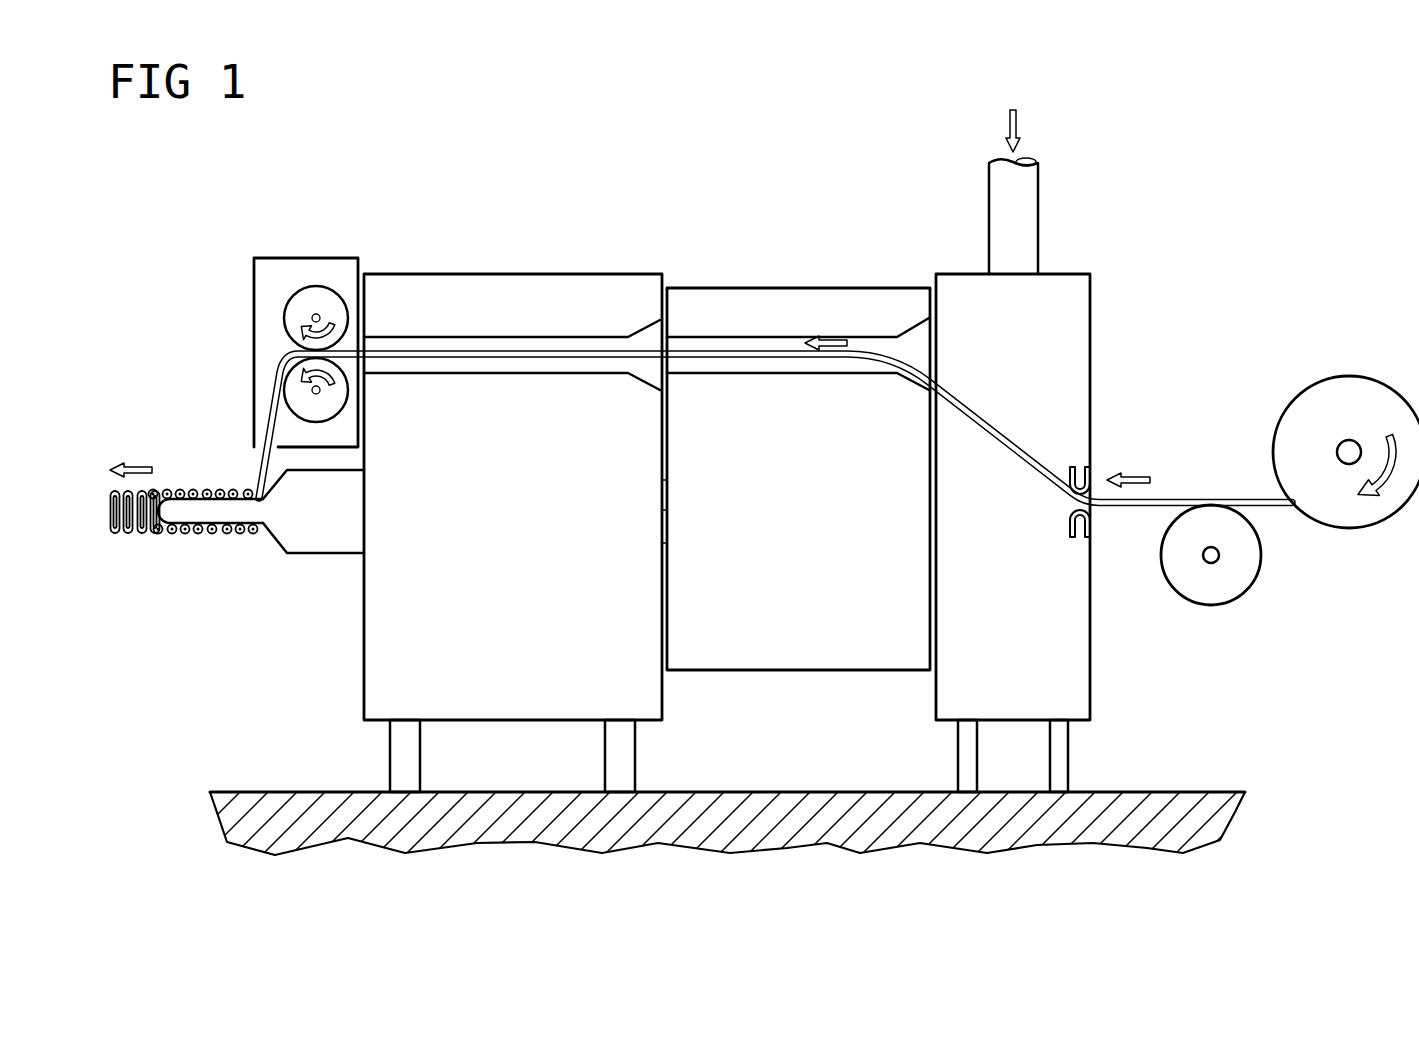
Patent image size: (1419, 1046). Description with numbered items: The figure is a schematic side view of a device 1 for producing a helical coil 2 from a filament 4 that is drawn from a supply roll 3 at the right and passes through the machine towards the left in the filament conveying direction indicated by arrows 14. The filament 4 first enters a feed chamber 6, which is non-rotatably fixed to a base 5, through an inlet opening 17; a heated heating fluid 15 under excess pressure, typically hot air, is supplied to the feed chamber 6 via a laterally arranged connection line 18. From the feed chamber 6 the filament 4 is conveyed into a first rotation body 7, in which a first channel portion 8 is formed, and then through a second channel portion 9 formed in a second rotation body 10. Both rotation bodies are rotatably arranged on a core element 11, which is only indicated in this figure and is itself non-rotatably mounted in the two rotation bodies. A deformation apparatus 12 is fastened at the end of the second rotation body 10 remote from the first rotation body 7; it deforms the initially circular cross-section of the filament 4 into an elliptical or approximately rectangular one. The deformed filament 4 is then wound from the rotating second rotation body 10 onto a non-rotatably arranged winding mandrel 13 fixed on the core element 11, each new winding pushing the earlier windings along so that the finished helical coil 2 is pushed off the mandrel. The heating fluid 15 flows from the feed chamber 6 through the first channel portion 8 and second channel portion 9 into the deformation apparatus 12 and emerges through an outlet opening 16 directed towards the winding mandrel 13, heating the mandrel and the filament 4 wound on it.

The device 1 is at (544, 228).
The helical coil 2 is at (131, 550).
The supply roll 3 is at (1347, 390).
The filament 4 is at (576, 350).
The base 5 is at (1152, 785).
The feed chamber 6 is at (1044, 410).
The first rotation body 7 is at (798, 450).
The first channel portion 8 is at (783, 330).
The second channel portion 9 is at (493, 330).
The second rotation body 10 is at (513, 470).
The core element 11 is at (661, 510).
The deformation apparatus 12 is at (286, 236).
The winding mandrel 13 is at (216, 512).
The arrows 14 is at (131, 462).
The heating fluid 15 is at (1070, 133).
The outlet opening 16 is at (260, 425).
The inlet opening 17 is at (1106, 520).
The connection line 18 is at (1022, 213).